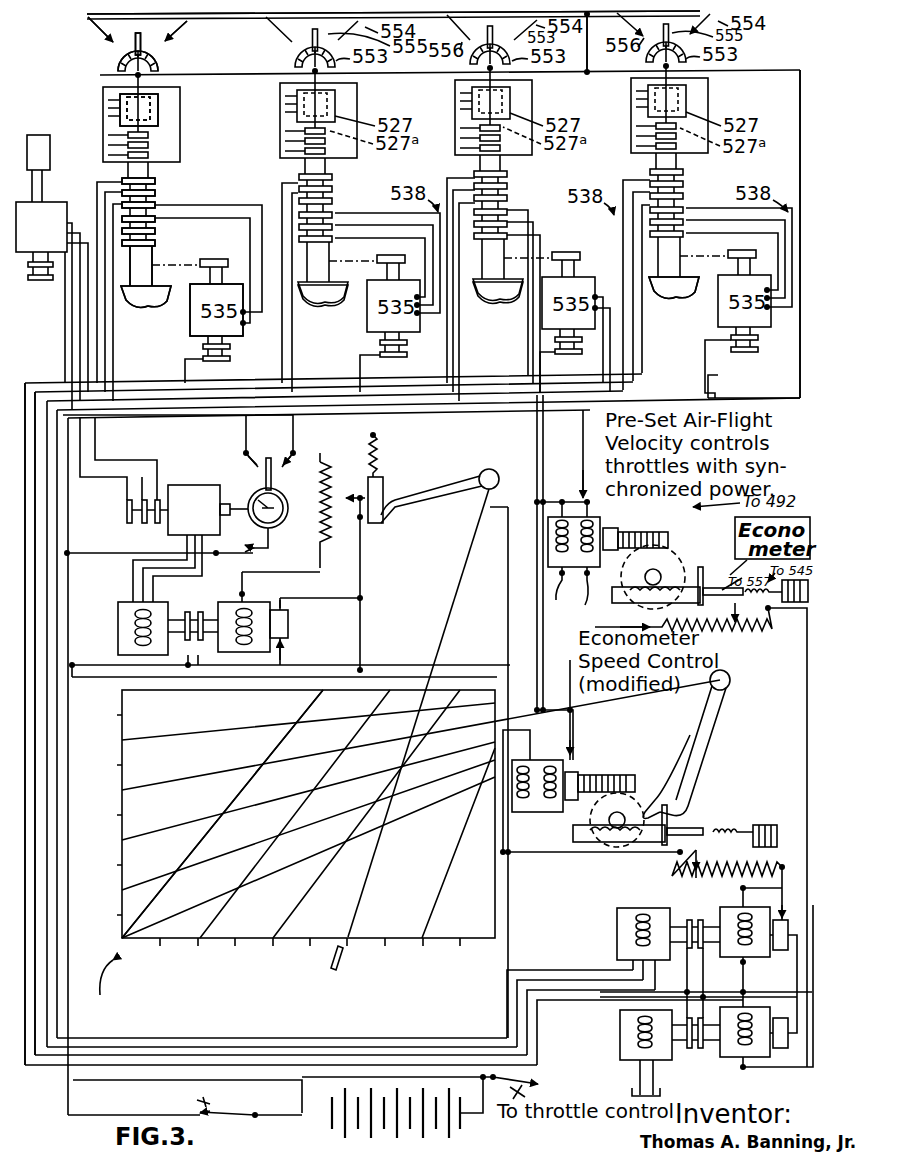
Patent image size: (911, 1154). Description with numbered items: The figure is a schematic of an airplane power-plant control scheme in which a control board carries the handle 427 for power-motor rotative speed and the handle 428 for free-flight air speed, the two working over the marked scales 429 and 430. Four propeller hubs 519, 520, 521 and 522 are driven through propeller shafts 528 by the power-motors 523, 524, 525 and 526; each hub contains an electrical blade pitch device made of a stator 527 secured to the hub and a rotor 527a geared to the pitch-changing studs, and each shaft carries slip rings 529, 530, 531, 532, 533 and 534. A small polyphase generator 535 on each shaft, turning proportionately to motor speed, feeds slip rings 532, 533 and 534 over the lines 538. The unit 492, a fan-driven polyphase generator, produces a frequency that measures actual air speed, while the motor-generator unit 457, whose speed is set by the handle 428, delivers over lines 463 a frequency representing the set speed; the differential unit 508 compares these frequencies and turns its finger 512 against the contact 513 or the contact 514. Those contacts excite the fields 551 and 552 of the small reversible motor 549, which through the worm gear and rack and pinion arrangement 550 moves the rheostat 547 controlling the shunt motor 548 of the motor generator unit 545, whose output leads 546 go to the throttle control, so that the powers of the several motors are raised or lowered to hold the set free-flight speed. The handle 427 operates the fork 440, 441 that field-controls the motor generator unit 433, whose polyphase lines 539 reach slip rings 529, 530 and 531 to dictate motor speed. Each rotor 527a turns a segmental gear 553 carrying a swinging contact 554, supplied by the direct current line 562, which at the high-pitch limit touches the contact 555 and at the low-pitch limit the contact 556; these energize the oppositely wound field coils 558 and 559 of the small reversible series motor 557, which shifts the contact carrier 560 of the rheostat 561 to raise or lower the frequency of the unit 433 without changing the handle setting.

The power-motor speed control handle 427 is at (122, 805).
The free-flight air speed handle 428 is at (350, 948).
The scale for power-motor speed handle 429 is at (111, 987).
The scale for free-flight speed handle 430 is at (237, 975).
The motor generator unit 433 is at (722, 905).
The fork arm 440 is at (693, 796).
The fork arm 441 is at (664, 780).
The motor-generator unit 457 is at (222, 602).
The polyphase lines 463 is at (128, 582).
The air-speed generator unit 492 is at (64, 200).
The polyphase differential unit 508 is at (194, 510).
The finger 512 is at (268, 456).
The contact 513 is at (283, 470).
The contact 514 is at (252, 470).
The propeller hub 519 is at (184, 99).
The propeller hub 520 is at (359, 100).
The propeller hub 521 is at (533, 99).
The propeller hub 522 is at (708, 97).
The power-motor 523 is at (150, 312).
The power-motor 524 is at (322, 306).
The power-motor 525 is at (497, 303).
The power-motor 526 is at (670, 300).
The stator element 527 is at (158, 119).
The rotor element 527a is at (150, 133).
The propeller shaft 528 is at (156, 180).
The slip ring 529 is at (156, 191).
The slip ring 530 is at (156, 203).
The slip ring 531 is at (156, 215).
The slip ring 532 is at (156, 227).
The slip ring 533 is at (156, 226).
The slip ring 534 is at (153, 249).
The polyphase generator 535 is at (216, 310).
The lines 538 is at (260, 204).
The polyphase lines 539 is at (50, 352).
The motor generator unit 545 is at (676, 1060).
The leads to throttle 546 is at (642, 1098).
The rheostat 547 is at (730, 640).
The shunt motor 548 is at (775, 1050).
The small reversible motor 549 is at (613, 566).
The worm gear and rack and pinion arrangement 550 is at (665, 565).
The field 551 is at (566, 567).
The field 552 is at (599, 573).
The segmental gear 553 is at (159, 64).
The swinging contact 554 is at (183, 28).
The contact 555 is at (150, 37).
The contact 556 is at (108, 44).
The small reversible series motor 557 is at (573, 812).
The field coil 558 is at (523, 806).
The field coil 559 is at (552, 815).
The contact carrier 560 is at (680, 828).
The rheostat 561 is at (672, 877).
The direct current line 562 is at (762, 70).